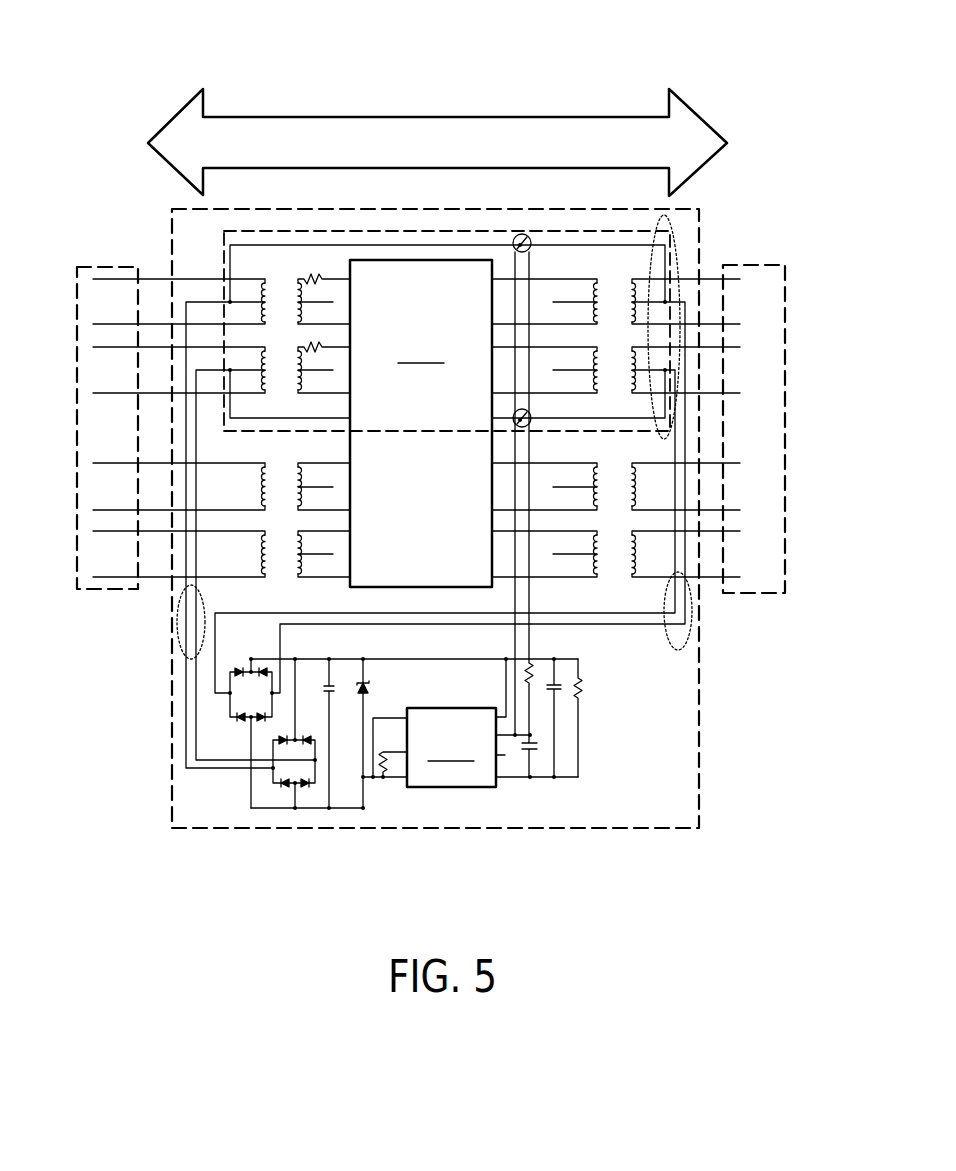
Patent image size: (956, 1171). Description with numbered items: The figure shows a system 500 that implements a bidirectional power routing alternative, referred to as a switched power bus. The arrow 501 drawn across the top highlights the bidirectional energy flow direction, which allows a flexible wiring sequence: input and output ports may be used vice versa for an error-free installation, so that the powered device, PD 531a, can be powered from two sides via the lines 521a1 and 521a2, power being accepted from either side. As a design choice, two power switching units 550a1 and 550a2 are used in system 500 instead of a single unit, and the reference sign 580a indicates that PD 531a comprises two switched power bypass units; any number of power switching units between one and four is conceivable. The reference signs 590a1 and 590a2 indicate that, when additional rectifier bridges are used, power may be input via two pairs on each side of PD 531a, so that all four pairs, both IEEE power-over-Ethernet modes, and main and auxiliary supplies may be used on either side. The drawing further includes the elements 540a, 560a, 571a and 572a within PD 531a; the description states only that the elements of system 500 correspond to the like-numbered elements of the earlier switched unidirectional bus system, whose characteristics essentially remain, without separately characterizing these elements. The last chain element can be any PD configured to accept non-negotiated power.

The system 500 is at (147, 80).
The arrow 501 is at (557, 125).
The line 521a1 is at (104, 596).
The line 521a2 is at (757, 596).
The PD 531a is at (378, 830).
The controller 540a is at (451, 723).
The power switching unit 550a1 is at (522, 234).
The power switching unit 550a2 is at (531, 424).
The switching unit 560a is at (447, 423).
The first rectifier bridge 571a is at (238, 664).
The second rectifier bridge 572a is at (306, 804).
The switched power bypass units 580a is at (678, 241).
The two-pair power input 590a1 is at (183, 655).
The two-pair power input 590a2 is at (690, 645).